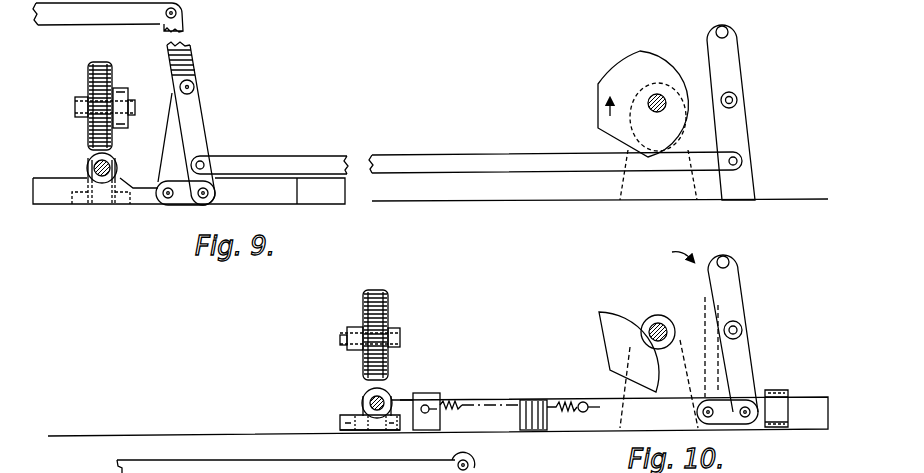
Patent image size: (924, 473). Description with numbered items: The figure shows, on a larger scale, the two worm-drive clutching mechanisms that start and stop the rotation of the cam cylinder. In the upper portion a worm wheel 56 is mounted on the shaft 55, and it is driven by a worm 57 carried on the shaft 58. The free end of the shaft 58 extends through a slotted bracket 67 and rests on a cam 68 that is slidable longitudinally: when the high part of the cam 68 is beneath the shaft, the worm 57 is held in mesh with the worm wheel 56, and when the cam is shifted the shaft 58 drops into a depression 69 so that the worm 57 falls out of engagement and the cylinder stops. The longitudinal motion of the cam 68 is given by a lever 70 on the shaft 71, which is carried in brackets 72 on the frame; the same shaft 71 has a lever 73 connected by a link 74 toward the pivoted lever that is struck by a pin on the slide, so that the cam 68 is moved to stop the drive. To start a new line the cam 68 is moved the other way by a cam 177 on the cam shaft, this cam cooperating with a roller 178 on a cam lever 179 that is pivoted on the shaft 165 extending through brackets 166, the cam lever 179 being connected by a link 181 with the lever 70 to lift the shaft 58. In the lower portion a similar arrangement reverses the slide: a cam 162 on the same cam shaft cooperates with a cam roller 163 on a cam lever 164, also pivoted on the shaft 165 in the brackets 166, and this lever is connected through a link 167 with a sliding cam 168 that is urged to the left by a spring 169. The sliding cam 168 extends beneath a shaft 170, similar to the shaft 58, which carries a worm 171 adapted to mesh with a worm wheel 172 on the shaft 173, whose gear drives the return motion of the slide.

In FIG. 9, the link 74 is at (136, 15).
In FIG. 9, the lever 73 is at (186, 53).
In FIG. 9, the lever 70 is at (200, 124).
In FIG. 9, the shaft 71 is at (194, 86).
In FIG. 9, the brackets 72 is at (170, 118).
In FIG. 9, the depression 69 is at (141, 186).
In FIG. 9, the cam 68 is at (285, 192).
In FIG. 9, the worm wheel 56 is at (113, 68).
In FIG. 9, the shaft 55 is at (134, 126).
In FIG. 9, the worm 57 is at (113, 162).
In FIG. 9, the slotted bracket 67 is at (88, 166).
In FIG. 9, the shaft 58 is at (100, 180).
In FIG. 10, the link 181 is at (490, 145).
In FIG. 10, the cam 177 is at (656, 47).
In FIG. 10, the cam lever 179 is at (742, 68).
In FIG. 10, the shaft 165 is at (728, 32).
In FIG. 10, the roller 178 is at (738, 100).
In FIG. 10, the brackets 166 is at (743, 175).
In FIG. 10, the cam 162 is at (642, 282).
In FIG. 10, the cam lever 164 is at (733, 297).
In FIG. 10, the cam roller 163 is at (742, 330).
In FIG. 10, the link 167 is at (723, 404).
In FIG. 10, the shaft 173 is at (396, 328).
In FIG. 10, the worm wheel 172 is at (390, 361).
In FIG. 10, the worm 171 is at (396, 400).
In FIG. 10, the shaft 170 is at (360, 396).
In FIG. 10, the spring 169 is at (567, 378).
In FIG. 10, the sliding cam 168 is at (593, 422).